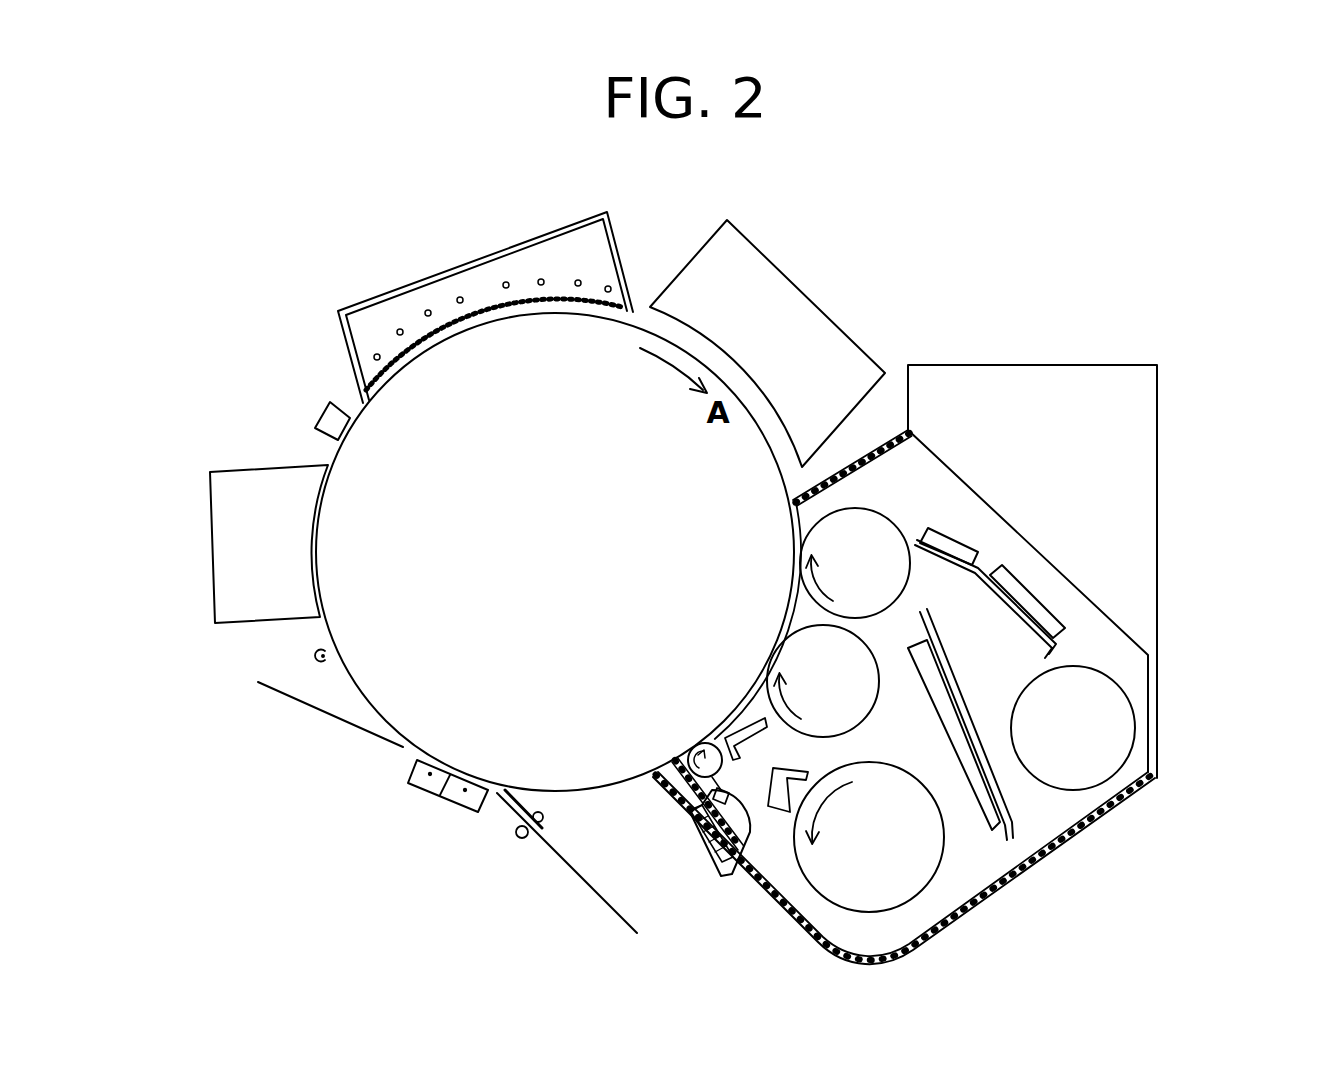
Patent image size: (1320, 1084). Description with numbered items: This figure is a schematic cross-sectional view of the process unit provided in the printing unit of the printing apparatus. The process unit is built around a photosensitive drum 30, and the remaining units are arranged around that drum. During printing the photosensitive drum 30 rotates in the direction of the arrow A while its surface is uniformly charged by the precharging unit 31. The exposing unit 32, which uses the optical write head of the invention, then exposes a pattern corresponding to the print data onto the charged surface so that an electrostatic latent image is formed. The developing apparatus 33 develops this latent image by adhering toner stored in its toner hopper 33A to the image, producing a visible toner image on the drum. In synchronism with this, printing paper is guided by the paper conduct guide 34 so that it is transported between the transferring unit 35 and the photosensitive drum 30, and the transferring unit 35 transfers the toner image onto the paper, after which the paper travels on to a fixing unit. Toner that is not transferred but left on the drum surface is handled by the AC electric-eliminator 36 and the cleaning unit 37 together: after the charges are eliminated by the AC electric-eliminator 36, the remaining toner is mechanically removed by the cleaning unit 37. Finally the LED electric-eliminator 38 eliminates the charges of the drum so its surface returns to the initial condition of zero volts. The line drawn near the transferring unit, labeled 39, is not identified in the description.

The photosensitive drum 30 is at (489, 635).
The precharging unit 31 is at (543, 253).
The exposing unit 32 is at (823, 308).
The developing apparatus 33 is at (1058, 845).
The toner hopper 33A is at (1160, 440).
The paper conduct guide 34 is at (518, 805).
The transferring unit 35 is at (420, 788).
The AC electric-eliminator 36 is at (312, 660).
The cleaning unit 37 is at (233, 472).
The LED electric-eliminator 38 is at (318, 410).
The transfer paper guide 39 is at (335, 720).